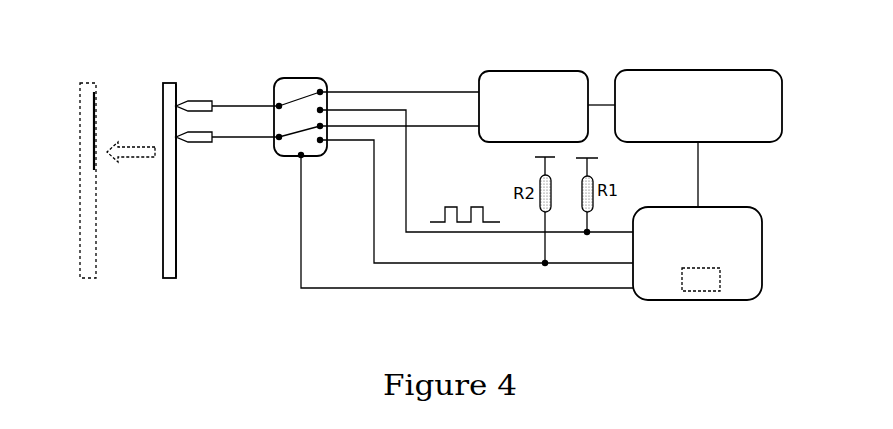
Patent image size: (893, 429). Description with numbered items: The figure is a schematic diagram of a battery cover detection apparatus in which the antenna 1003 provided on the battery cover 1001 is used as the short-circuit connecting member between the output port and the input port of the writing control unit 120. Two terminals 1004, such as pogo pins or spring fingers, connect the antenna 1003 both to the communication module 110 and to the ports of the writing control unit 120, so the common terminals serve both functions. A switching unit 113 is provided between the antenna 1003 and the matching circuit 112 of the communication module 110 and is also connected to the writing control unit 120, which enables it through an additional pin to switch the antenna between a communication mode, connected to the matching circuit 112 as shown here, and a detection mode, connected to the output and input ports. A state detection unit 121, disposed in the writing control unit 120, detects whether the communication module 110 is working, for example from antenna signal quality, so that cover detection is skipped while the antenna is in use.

The battery cover 1001 is at (163, 262).
The antenna 1003 is at (177, 89).
The terminals 1004 is at (198, 109).
The switching unit 113 is at (300, 83).
The matching circuit 112 is at (537, 73).
The communication module 110 is at (716, 74).
The writing control unit 120 is at (738, 243).
The state detection unit 121 is at (707, 268).